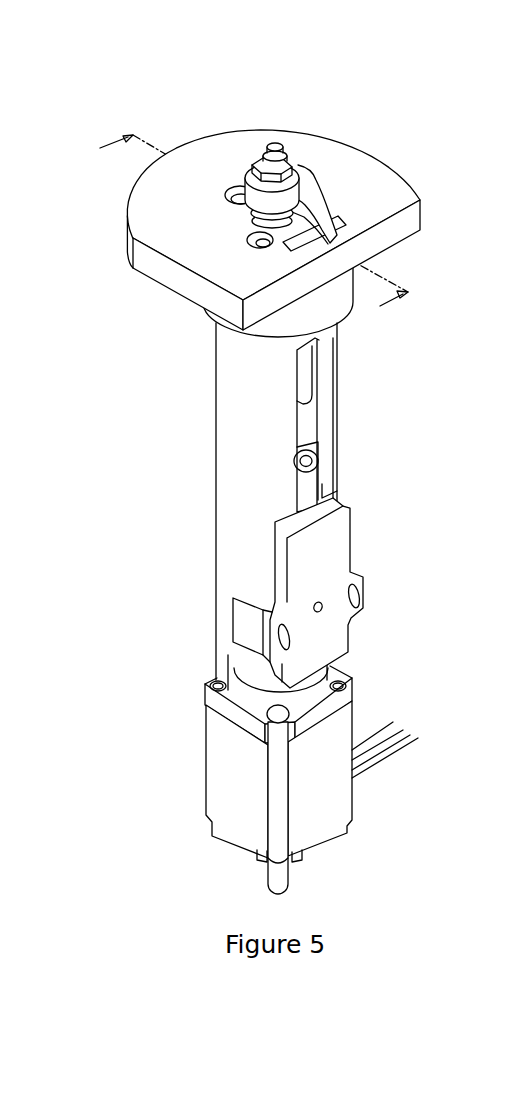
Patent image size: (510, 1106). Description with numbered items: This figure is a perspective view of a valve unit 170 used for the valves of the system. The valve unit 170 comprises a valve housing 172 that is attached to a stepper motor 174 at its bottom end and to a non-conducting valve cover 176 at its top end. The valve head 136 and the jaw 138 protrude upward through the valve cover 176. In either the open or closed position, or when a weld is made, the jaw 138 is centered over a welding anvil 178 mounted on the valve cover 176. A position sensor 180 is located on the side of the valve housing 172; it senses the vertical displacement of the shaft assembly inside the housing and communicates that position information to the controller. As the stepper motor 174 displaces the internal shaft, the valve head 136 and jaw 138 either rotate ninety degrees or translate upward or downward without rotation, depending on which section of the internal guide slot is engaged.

The valve unit 170 is at (161, 109).
The valve head 136 is at (300, 162).
The jaw 138 is at (333, 198).
The valve housing 172 is at (215, 420).
The stepper motor 174 is at (230, 792).
The non-conducting valve cover 176 is at (175, 280).
The welding anvil 178 is at (293, 242).
The position sensor 180 is at (350, 529).